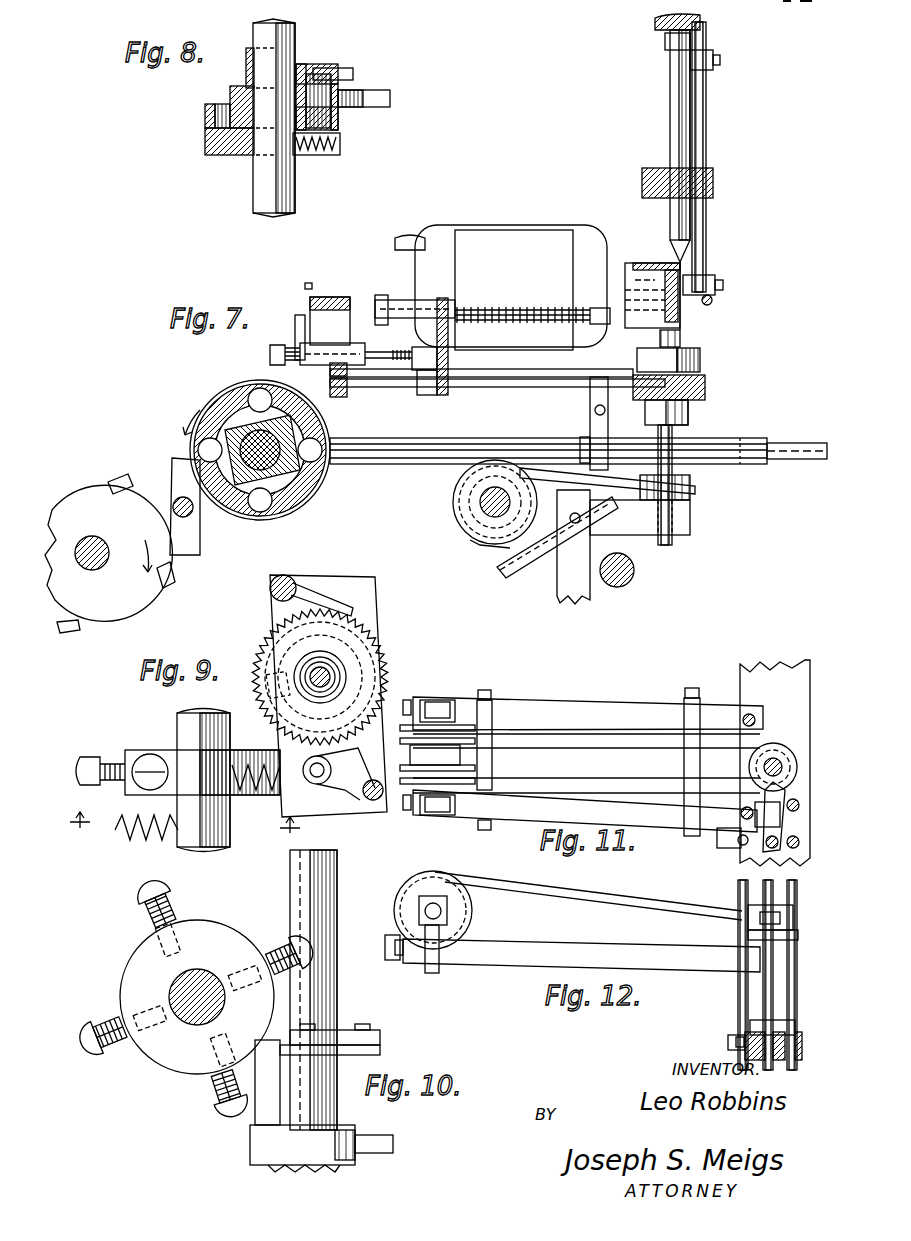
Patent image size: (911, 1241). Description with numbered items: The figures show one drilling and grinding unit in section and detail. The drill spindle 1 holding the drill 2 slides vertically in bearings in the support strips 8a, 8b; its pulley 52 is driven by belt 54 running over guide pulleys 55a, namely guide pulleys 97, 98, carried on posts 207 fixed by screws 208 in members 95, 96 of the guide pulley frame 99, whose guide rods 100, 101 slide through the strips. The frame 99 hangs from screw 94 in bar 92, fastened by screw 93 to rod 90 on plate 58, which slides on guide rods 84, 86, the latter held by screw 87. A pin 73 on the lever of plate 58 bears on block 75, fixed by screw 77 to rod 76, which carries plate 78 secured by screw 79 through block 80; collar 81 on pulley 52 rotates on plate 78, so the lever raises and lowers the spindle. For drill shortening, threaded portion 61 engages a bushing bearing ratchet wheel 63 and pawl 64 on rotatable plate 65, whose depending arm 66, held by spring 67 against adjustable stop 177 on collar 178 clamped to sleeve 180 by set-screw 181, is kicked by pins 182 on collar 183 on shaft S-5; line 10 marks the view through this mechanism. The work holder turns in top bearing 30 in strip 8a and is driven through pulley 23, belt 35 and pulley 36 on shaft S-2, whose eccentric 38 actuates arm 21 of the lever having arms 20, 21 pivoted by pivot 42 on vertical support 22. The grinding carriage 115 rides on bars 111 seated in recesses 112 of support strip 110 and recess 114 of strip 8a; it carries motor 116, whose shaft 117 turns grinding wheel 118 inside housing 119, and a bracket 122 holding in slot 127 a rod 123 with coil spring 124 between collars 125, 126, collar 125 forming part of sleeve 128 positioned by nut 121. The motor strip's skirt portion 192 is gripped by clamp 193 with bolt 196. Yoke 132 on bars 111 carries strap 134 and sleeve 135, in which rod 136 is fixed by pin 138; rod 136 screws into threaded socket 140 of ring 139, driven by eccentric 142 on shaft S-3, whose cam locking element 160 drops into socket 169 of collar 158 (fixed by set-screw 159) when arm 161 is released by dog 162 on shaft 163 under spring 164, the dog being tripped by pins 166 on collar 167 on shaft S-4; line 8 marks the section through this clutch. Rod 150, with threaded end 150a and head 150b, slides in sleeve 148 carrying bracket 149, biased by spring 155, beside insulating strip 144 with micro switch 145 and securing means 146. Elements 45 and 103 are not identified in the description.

In FIG. 7, the drill spindle 1 is at (670, 128).
In FIG. 7, the drill 2 is at (682, 250).
In FIG. 7, the section line 8 is at (170, 452).
In FIG. 7, the longitudinal support strip 8a is at (705, 386).
In FIG. 12, the longitudinal support strip 8b is at (740, 1055).
In FIG. 9, the section line 10 is at (184, 822).
In FIG. 7, the lever arm 20 is at (645, 535).
In FIG. 7, the lever arm 21 is at (500, 573).
In FIG. 7, the vertical support 22 is at (562, 588).
In FIG. 7, the pulley 23 is at (695, 505).
In FIG. 7, the top bearing 30 is at (690, 412).
In FIG. 7, the belt 35 is at (585, 482).
In FIG. 7, the pulley 36 is at (455, 512).
In FIG. 7, the eccentric 38 is at (495, 548).
In FIG. 7, the pivot 42 is at (582, 523).
In FIG. 7, the member 45 is at (700, 350).
In FIG. 7, the pulley 52 is at (655, 23).
In FIG. 11, the pulley 52 is at (790, 750).
In FIG. 11, the belt 54 is at (552, 740).
In FIG. 12, the belt 54 is at (600, 898).
In FIG. 11, the guide pulleys 55a is at (406, 700).
In FIG. 11, the plate 58 is at (717, 840).
In FIG. 9, the threaded portion 61 is at (332, 672).
In FIG. 9, the ratchet wheel 63 is at (270, 640).
In FIG. 10, the ratchet wheel 63 is at (275, 1020).
In FIG. 9, the pawl 64 is at (348, 793).
In FIG. 10, the pawl 64 is at (345, 1030).
In FIG. 9, the rotatably mounted plate 65 is at (373, 802).
In FIG. 9, the depending arm 66 is at (265, 752).
In FIG. 10, the depending arm 66 is at (268, 1105).
In FIG. 9, the spring 67 is at (146, 839).
In FIG. 10, the spring 67 is at (125, 860).
In FIG. 7, the pin 73 is at (712, 300).
In FIG. 7, the block 75 is at (715, 278).
In FIG. 7, the rod 76 is at (706, 210).
In FIG. 11, the rod 76 is at (791, 756).
In FIG. 7, the screw 77 is at (723, 285).
In FIG. 7, the horizontal plate 78 is at (713, 52).
In FIG. 7, the screw 79 is at (720, 60).
In FIG. 7, the block 80 is at (712, 70).
In FIG. 7, the collar 81 is at (665, 42).
In FIG. 11, the guide rod 84 is at (778, 852).
In FIG. 12, the guide rod 84 is at (787, 1000).
In FIG. 7, the guide rod 86 is at (713, 187).
In FIG. 11, the guide rod 86 is at (770, 850).
In FIG. 12, the guide rod 86 is at (745, 1042).
In FIG. 11, the screw 87 is at (720, 818).
In FIG. 12, the screw 87 is at (728, 1043).
In FIG. 11, the rod 90 is at (709, 857).
In FIG. 12, the rod 90 is at (765, 1020).
In FIG. 11, the bar 92 is at (755, 810).
In FIG. 12, the bar 92 is at (748, 920).
In FIG. 11, the screw 93 is at (770, 852).
In FIG. 12, the screw 93 is at (738, 890).
In FIG. 11, the screw 94 is at (770, 801).
In FIG. 12, the screw 94 is at (763, 898).
In FIG. 11, the frame member 95 is at (535, 812).
In FIG. 12, the frame member 95 is at (588, 945).
In FIG. 11, the frame member 96 is at (562, 698).
In FIG. 11, the guide pulley 97 is at (455, 815).
In FIG. 12, the guide pulley 97 is at (470, 918).
In FIG. 11, the guide pulley 98 is at (460, 725).
In FIG. 11, the guide pulley frame 99 is at (674, 694).
In FIG. 11, the guide rod 100 is at (745, 714).
In FIG. 11, the guide rod 101 is at (760, 800).
In FIG. 12, the guide rod 101 is at (748, 1028).
In FIG. 11, the frame 103 is at (768, 718).
In FIG. 7, the support strip 110 is at (330, 370).
In FIG. 7, the parallel bars 111 is at (505, 380).
In FIG. 7, the recesses 112 is at (354, 391).
In FIG. 7, the recess 114 is at (619, 423).
In FIG. 7, the carriage 115 is at (545, 396).
In FIG. 7, the motor 116 is at (545, 222).
In FIG. 7, the motor shaft 117 is at (645, 263).
In FIG. 7, the grinding wheel 118 is at (678, 318).
In FIG. 7, the housing 119 is at (668, 263).
In FIG. 7, the nut 121 is at (400, 300).
In FIG. 7, the transverse bracket 122 is at (490, 325).
In FIG. 7, the rod 123 is at (515, 307).
In FIG. 7, the coil spring 124 is at (548, 305).
In FIG. 7, the collar 125 is at (460, 300).
In FIG. 7, the collar 126 is at (598, 308).
In FIG. 7, the slot 127 is at (443, 298).
In FIG. 7, the sleeve 128 is at (400, 293).
In FIG. 7, the yoke 132 is at (590, 400).
In FIG. 7, the strap 134 is at (590, 430).
In FIG. 7, the sleeve 135 is at (707, 440).
In FIG. 7, the rod 136 is at (440, 455).
In FIG. 7, the pin 138 is at (745, 462).
In FIG. 8, the ring 139 is at (230, 92).
In FIG. 8, the threaded socket 140 is at (352, 107).
In FIG. 8, the eccentric 142 is at (245, 70).
In FIG. 7, the supporting and insulating strip 144 is at (310, 300).
In FIG. 7, the micro switch 145 is at (345, 330).
In FIG. 7, the securing means 146 is at (340, 297).
In FIG. 7, the horizontal sleeve 148 is at (300, 362).
In FIG. 7, the upstanding bracket 149 is at (295, 335).
In FIG. 7, the rod 150 is at (270, 352).
In FIG. 7, the threaded end 150a is at (420, 392).
In FIG. 7, the head 150b is at (242, 353).
In FIG. 7, the spring 155 is at (326, 313).
In FIG. 8, the collar 158 is at (222, 155).
In FIG. 8, the set-screw 159 is at (322, 156).
In FIG. 8, the cam locking element 160 is at (318, 80).
In FIG. 8, the arm 161 is at (353, 72).
In FIG. 7, the dog 162 is at (195, 552).
In FIG. 7, the shaft 163 is at (200, 545).
In FIG. 7, the spring 164 is at (176, 498).
In FIG. 7, the pin 166 is at (122, 474).
In FIG. 7, the collar 167 is at (80, 495).
In FIG. 8, the socket 169 is at (205, 118).
In FIG. 9, the adjustable stop 177 is at (290, 672).
In FIG. 10, the adjustable stop 177 is at (265, 1115).
In FIG. 10, the collar 178 is at (250, 1152).
In FIG. 10, the sleeve 180 is at (340, 1070).
In FIG. 10, the set-screw 181 is at (393, 1140).
In FIG. 9, the pins 182 is at (120, 760).
In FIG. 10, the pins 182 is at (172, 912).
In FIG. 9, the collar 183 is at (250, 797).
In FIG. 10, the collar 183 is at (180, 1050).
In FIG. 7, the skirt portion 192 is at (668, 360).
In FIG. 7, the clamp 193 is at (585, 325).
In FIG. 7, the adjustable bolt 196 is at (654, 339).
In FIG. 11, the posts 207 is at (440, 700).
In FIG. 11, the screws 208 is at (404, 812).
In FIG. 12, the screws 208 is at (395, 960).
In FIG. 7, the shaft S-2 is at (485, 512).
In FIG. 8, the shaft S-3 is at (255, 194).
In FIG. 7, the shaft S-3 is at (255, 520).
In FIG. 7, the shaft S-4 is at (103, 530).
In FIG. 7, the shaft S-5 is at (630, 582).
In FIG. 9, the shaft S-5 is at (178, 735).
In FIG. 10, the shaft S-5 is at (168, 985).